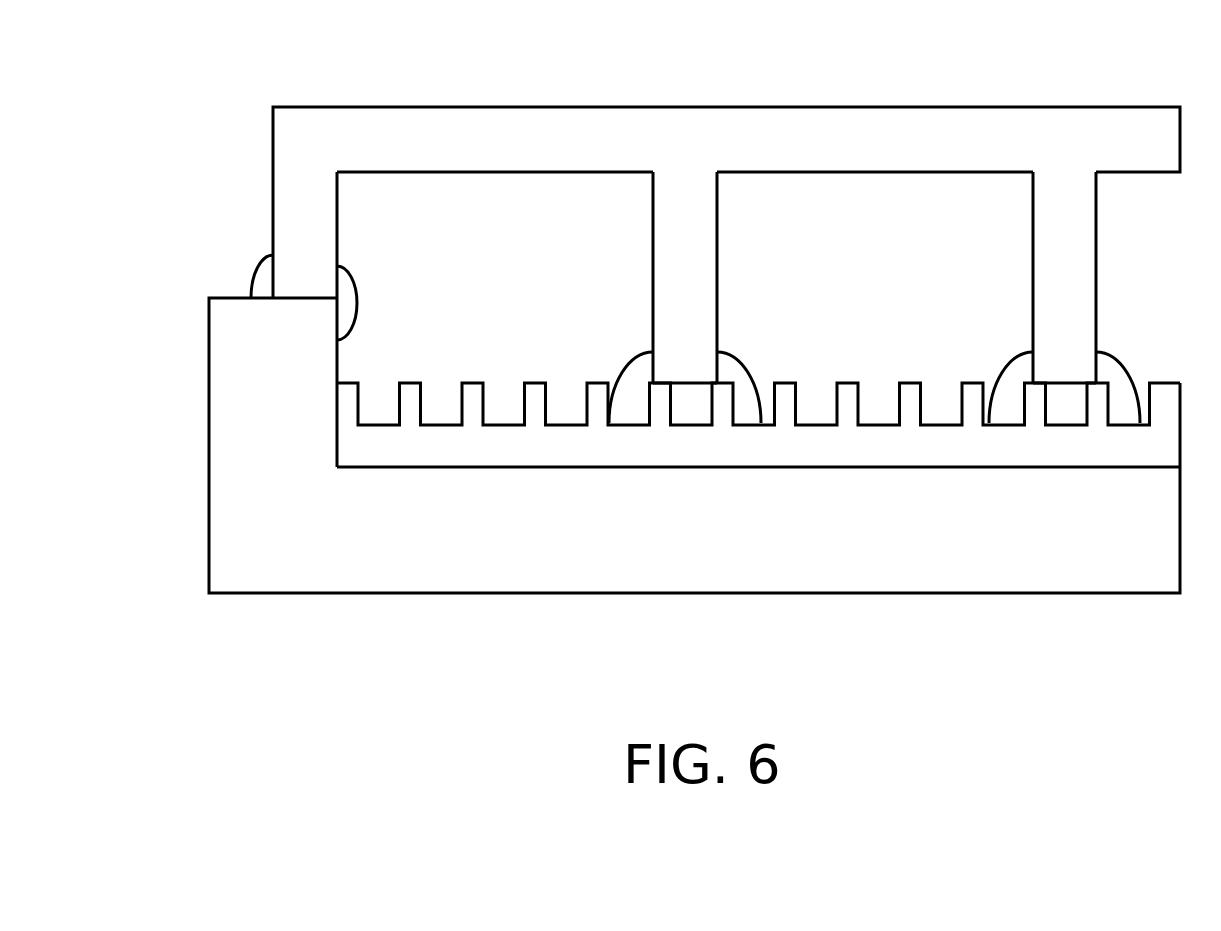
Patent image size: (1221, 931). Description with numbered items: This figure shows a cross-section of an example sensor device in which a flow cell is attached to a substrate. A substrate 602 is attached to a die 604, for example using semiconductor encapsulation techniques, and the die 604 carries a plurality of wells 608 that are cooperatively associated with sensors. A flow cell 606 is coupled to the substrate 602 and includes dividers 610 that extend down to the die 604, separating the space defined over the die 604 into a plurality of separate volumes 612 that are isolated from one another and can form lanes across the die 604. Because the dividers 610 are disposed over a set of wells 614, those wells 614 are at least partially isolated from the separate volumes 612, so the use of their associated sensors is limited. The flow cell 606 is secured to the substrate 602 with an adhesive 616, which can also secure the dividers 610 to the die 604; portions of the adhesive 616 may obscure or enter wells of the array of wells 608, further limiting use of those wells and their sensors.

The substrate 602 is at (209, 445).
The die 604 is at (405, 447).
The flow cell 606 is at (273, 138).
The wells 608 is at (563, 402).
The dividers 610 is at (688, 227).
The separate volumes 612 is at (498, 227).
The wells under the dividers 614 is at (692, 400).
The adhesive 616 is at (253, 273).